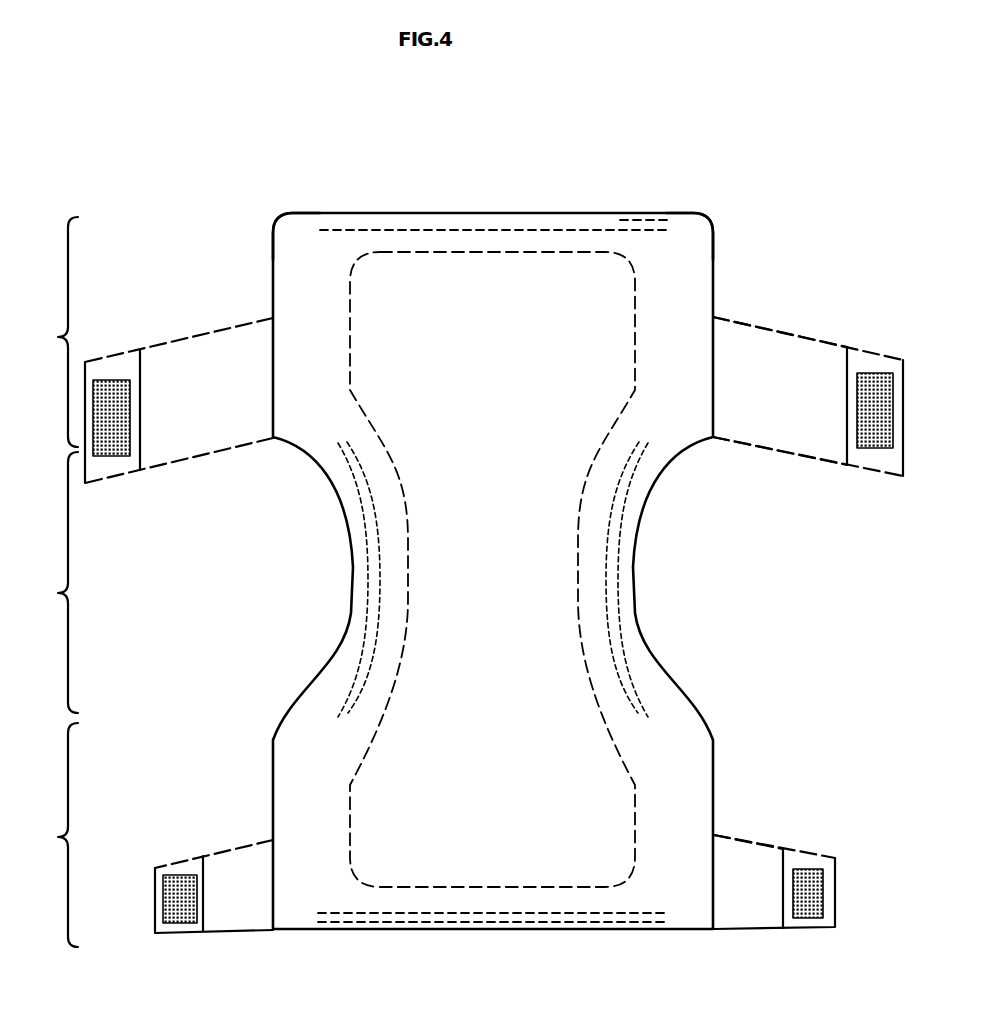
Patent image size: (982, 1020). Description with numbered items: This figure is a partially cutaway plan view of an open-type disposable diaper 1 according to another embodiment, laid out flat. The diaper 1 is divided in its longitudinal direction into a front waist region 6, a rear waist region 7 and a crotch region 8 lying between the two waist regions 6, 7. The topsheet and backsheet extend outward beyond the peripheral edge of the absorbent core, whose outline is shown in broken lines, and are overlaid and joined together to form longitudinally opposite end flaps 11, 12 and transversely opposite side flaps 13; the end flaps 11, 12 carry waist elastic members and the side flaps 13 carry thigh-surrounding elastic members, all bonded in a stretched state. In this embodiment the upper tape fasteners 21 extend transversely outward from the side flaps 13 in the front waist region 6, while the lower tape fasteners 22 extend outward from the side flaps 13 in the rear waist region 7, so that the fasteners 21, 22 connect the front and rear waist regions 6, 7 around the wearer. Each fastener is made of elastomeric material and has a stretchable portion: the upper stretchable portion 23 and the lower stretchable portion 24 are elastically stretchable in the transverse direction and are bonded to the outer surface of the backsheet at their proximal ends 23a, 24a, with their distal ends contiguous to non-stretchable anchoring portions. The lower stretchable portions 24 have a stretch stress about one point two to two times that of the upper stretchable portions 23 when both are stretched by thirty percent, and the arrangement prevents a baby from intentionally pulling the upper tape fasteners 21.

The diaper 1 is at (582, 148).
The front waist region 6 is at (55, 835).
The rear waist region 7 is at (58, 332).
The crotch region 8 is at (55, 582).
The end flap 11 is at (477, 903).
The end flap 12 is at (473, 232).
The side flaps 13 is at (283, 262).
The upper tape fasteners 21 is at (774, 885).
The lower tape fasteners 22 is at (808, 391).
The upper stretchable portion 23 is at (763, 853).
The proximal end 23a is at (725, 848).
The lower stretchable portion 24 is at (802, 437).
The proximal end 24a is at (729, 425).